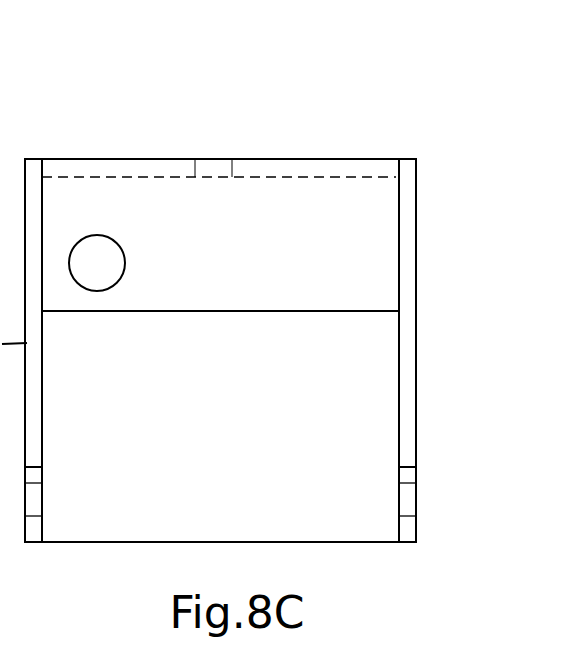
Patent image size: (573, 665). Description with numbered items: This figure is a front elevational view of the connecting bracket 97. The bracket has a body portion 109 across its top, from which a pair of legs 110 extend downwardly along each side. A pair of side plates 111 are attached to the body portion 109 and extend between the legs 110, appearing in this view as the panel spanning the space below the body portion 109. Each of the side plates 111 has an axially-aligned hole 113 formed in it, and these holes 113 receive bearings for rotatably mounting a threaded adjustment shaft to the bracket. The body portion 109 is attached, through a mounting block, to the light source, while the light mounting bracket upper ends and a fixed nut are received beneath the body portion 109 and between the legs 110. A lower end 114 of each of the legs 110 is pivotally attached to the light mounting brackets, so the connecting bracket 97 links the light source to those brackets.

The connecting bracket 97 is at (186, 143).
The body portion 109 is at (260, 167).
The legs 110 is at (412, 301).
The side plates 111 is at (281, 285).
The holes 113 is at (117, 270).
The lower end 114 is at (34, 453).